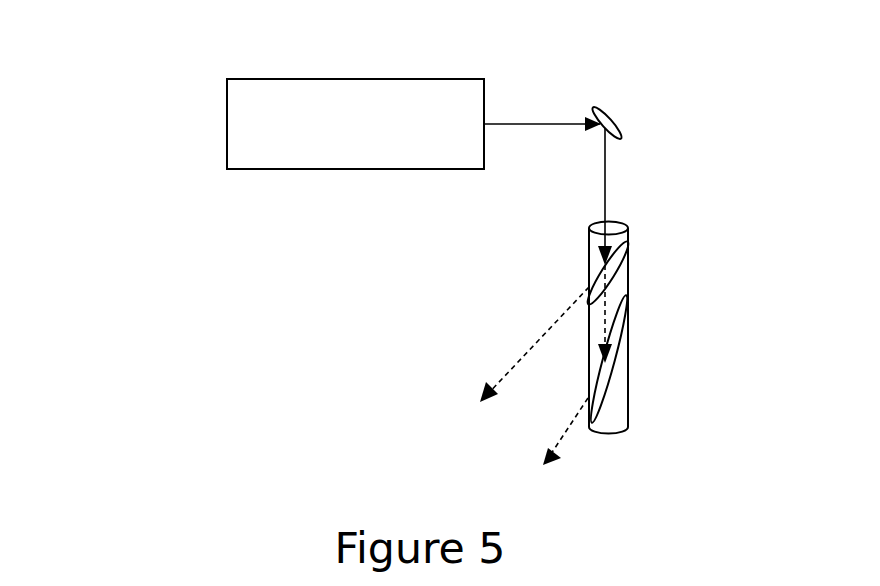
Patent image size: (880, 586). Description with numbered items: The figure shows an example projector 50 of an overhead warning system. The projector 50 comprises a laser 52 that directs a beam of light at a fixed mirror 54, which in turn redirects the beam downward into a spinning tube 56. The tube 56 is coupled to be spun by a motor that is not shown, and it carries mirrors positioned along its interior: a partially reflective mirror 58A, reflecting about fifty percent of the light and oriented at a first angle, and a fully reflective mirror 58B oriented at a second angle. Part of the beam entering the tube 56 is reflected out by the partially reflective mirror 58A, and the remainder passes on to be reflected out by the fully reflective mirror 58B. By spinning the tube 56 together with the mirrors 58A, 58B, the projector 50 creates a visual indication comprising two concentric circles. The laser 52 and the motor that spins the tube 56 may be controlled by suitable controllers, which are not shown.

The projector 50 is at (112, 86).
The laser 52 is at (227, 124).
The fixed mirror 54 is at (614, 117).
The spinning tube 56 is at (628, 412).
The partially reflective mirror 58A is at (621, 271).
The fully reflective mirror 58B is at (619, 363).